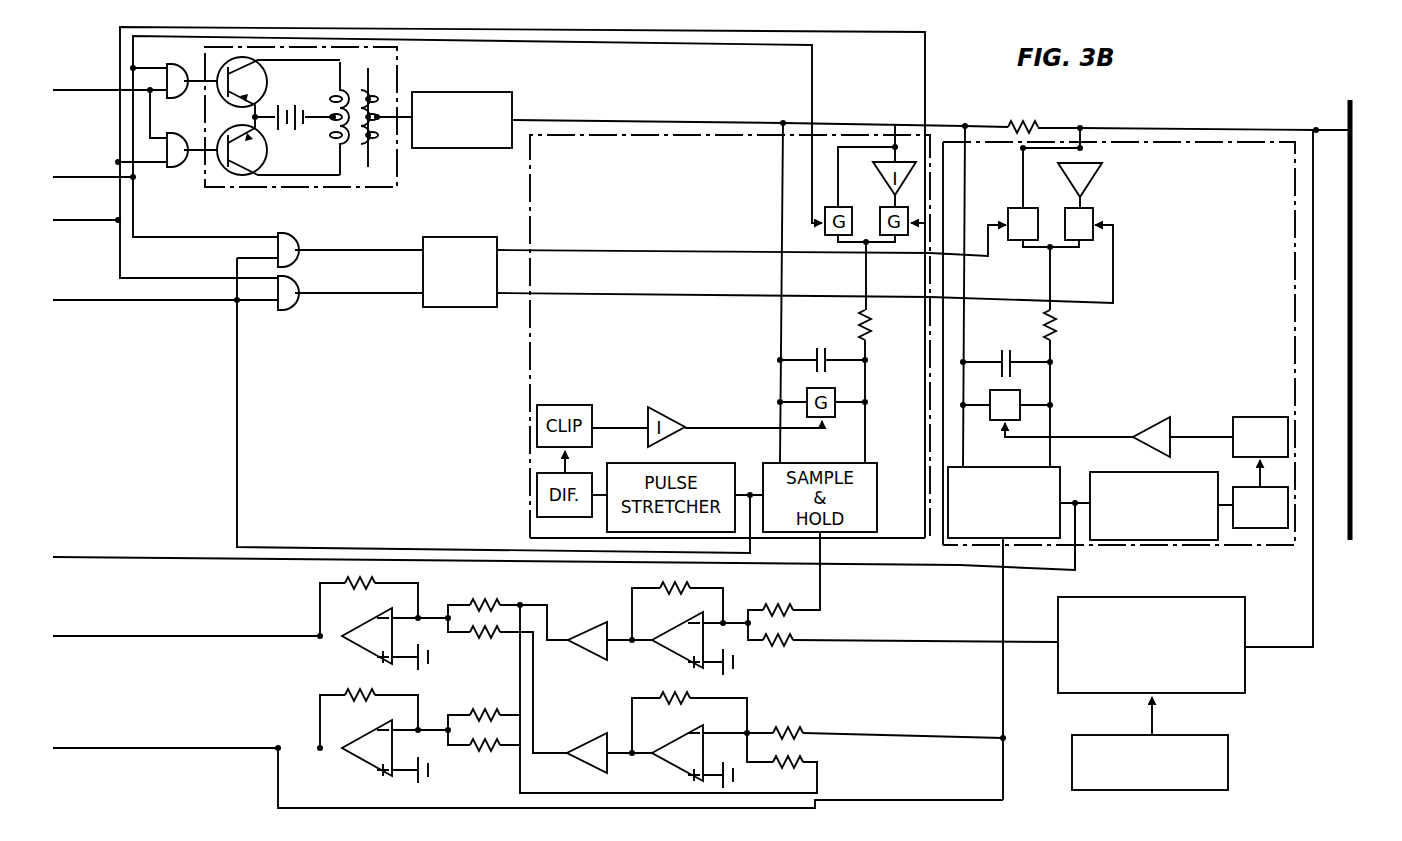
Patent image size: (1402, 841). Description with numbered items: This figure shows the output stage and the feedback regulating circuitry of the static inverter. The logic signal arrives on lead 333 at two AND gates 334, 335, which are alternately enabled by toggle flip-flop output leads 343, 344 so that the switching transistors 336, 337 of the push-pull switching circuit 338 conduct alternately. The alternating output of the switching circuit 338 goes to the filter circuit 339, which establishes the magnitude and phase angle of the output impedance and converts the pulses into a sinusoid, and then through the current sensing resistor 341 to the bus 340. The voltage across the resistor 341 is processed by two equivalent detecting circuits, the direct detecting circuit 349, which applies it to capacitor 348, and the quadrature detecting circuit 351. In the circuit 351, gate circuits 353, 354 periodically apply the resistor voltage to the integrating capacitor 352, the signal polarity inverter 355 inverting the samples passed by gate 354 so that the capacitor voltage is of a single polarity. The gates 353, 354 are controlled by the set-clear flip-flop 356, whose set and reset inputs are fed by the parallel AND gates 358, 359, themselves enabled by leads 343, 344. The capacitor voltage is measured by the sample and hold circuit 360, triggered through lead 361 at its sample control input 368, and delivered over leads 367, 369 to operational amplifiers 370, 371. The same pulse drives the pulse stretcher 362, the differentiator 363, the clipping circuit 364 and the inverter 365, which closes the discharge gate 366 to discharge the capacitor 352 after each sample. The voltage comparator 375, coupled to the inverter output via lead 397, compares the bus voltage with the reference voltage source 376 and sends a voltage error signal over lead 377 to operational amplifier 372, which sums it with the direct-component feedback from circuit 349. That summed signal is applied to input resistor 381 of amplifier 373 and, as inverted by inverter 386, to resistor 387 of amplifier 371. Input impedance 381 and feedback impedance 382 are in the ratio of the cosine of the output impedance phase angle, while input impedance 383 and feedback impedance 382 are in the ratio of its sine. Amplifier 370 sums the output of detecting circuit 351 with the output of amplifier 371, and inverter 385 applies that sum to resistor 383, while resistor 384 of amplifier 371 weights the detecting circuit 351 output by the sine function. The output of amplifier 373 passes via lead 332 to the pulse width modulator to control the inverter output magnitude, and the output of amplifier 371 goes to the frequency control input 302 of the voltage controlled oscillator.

The frequency control input 302 is at (98, 748).
The lead 332 is at (98, 636).
The lead 333 is at (98, 90).
The AND gate 334 is at (179, 64).
The AND gate 335 is at (183, 118).
The switching transistor 336 is at (267, 84).
The switching transistor 337 is at (267, 153).
The push-pull switching circuit 338 is at (398, 185).
The filter circuit 339 is at (457, 92).
The bus 340 is at (1378, 120).
The current sensing resistor 341 is at (1013, 126).
The output lead 343 is at (98, 177).
The output lead 344 is at (98, 220).
The capacitor 348 is at (829, 332).
The detecting circuit 349 is at (532, 163).
The detecting circuit 351 is at (98, 300).
The integrating capacitor 352 is at (1009, 336).
The gate circuit 353 is at (1007, 212).
The gate circuit 354 is at (1094, 210).
The signal polarity inverter circuit 355 is at (1098, 173).
The set-clear flip-flop circuit 356 is at (443, 237).
The AND gate 358 is at (290, 233).
The AND gate 359 is at (292, 282).
The sample and hold circuit 360 is at (993, 467).
The lead 361 is at (101, 558).
The pulse stretcher 362 is at (1142, 472).
The differentiator 363 is at (1240, 487).
The clipping circuit 364 is at (1265, 417).
The signal polarity inverter 365 is at (1150, 422).
The discharge gate 366 is at (995, 421).
The lead 367 is at (851, 733).
The sample control input 368 is at (1075, 488).
The lead 369 is at (851, 800).
The operational amplifier 370 is at (661, 788).
The operational amplifier 371 is at (350, 780).
The operational amplifier 372 is at (665, 677).
The operational amplifier 373 is at (342, 669).
The voltage comparator 375 is at (1058, 606).
The reference voltage source 376 is at (1228, 763).
The lead 377 is at (841, 640).
The input impedance 381 is at (475, 597).
The feedback impedance 382 is at (367, 593).
The input impedance 383 is at (492, 641).
The resistor 384 is at (492, 751).
The signal polarity inverter 385 is at (593, 743).
The signal polarity inverter 386 is at (600, 621).
The resistor 387 is at (485, 709).
The lead 397 is at (1312, 588).